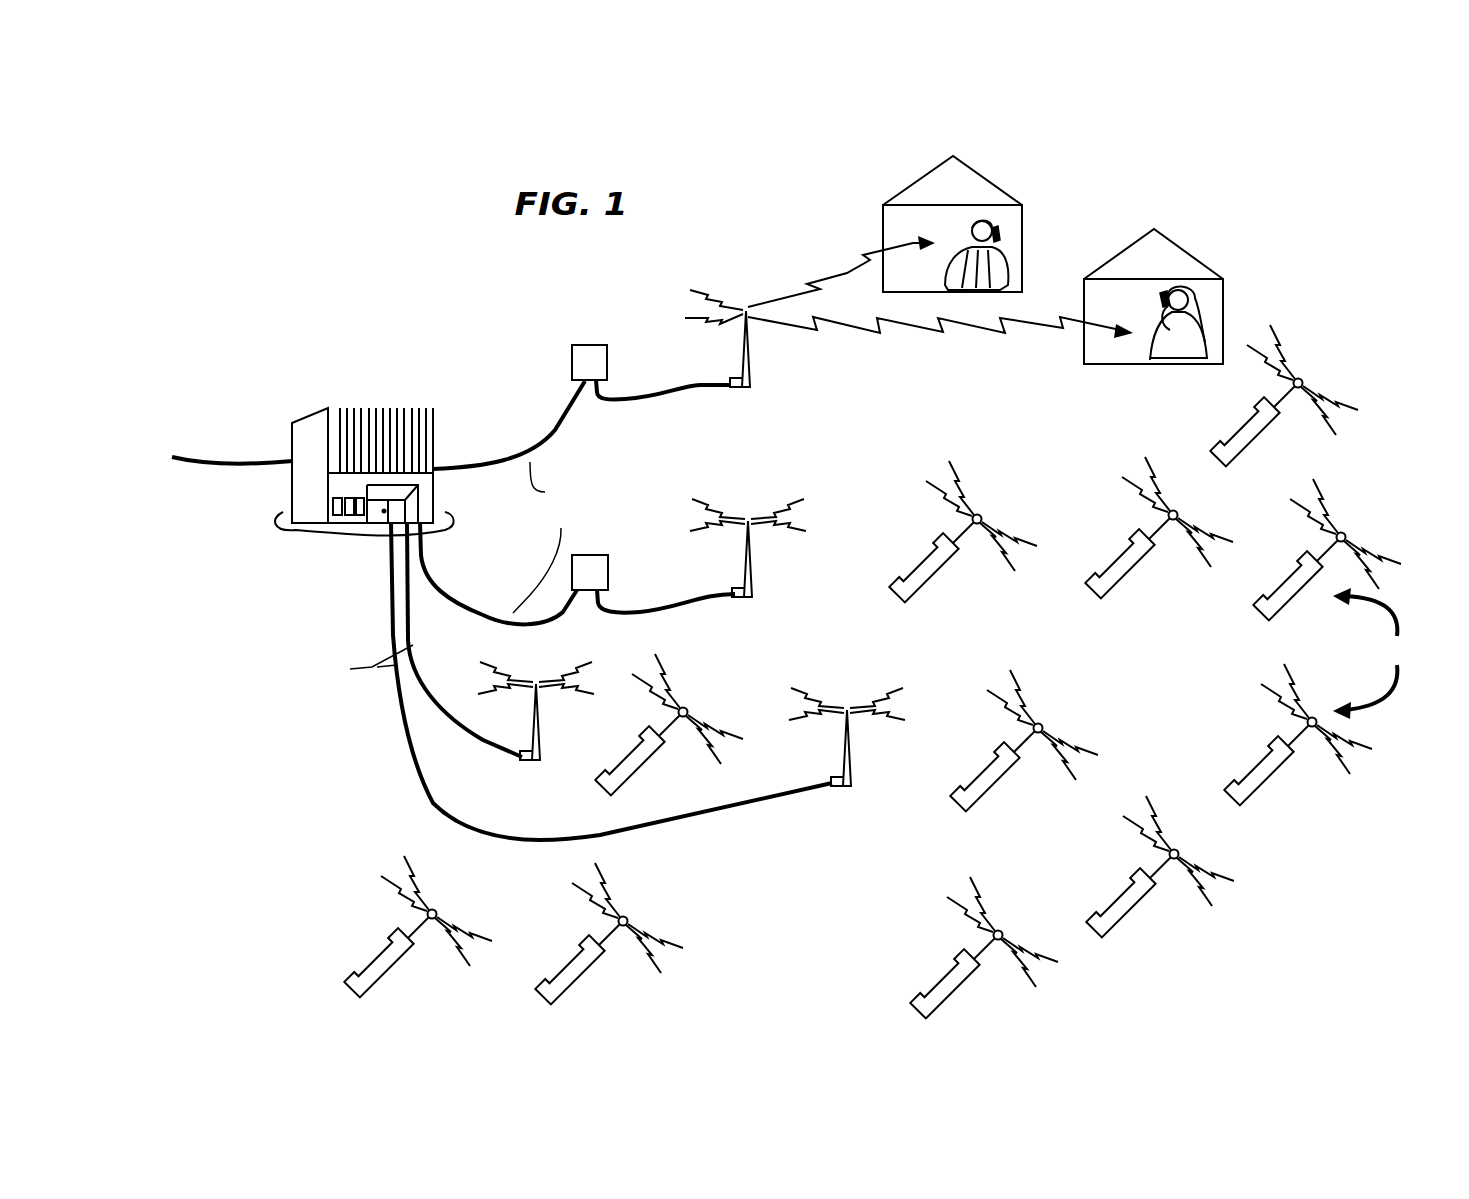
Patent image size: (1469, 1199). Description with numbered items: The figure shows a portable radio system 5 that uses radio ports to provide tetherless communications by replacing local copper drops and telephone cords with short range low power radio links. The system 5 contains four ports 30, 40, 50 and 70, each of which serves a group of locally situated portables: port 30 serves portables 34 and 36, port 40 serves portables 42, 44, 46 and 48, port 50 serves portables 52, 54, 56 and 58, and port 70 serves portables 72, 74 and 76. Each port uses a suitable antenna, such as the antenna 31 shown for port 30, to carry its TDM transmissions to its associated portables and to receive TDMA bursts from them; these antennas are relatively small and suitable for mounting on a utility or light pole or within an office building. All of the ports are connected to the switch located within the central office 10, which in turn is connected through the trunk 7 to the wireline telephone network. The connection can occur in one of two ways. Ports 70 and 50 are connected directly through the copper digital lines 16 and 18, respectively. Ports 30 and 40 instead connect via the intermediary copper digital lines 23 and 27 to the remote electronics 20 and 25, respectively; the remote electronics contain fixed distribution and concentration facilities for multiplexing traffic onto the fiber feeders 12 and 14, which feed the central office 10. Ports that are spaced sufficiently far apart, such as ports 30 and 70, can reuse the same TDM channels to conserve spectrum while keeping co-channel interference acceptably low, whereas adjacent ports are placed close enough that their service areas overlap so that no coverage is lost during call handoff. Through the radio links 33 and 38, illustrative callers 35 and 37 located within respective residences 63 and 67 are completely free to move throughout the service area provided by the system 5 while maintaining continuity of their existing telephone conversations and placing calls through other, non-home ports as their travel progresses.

The system 5 is at (205, 863).
The trunk 7 is at (217, 457).
The central office 10 is at (325, 415).
The fiber feeder 12 is at (557, 427).
The fiber feeder 14 is at (497, 615).
The copper digital line 16 is at (483, 742).
The copper digital line 18 is at (422, 786).
The remote electronics 20 is at (572, 365).
The intermediary copper digital line 23 is at (648, 398).
The remote electronics 25 is at (608, 568).
The intermediary copper digital line 27 is at (713, 597).
The port 30 is at (745, 390).
The antenna 31 is at (747, 311).
The radio link 33 is at (840, 276).
The portable 34 is at (997, 236).
The caller 35 is at (1005, 262).
The portable 36 is at (1162, 300).
The caller 37 is at (1200, 324).
The radio link 38 is at (913, 330).
The port 40 is at (752, 592).
The portable 42 is at (925, 560).
The portable 44 is at (1128, 545).
The portable 46 is at (1290, 580).
The portable 48 is at (1243, 428).
The port 50 is at (845, 790).
The portable 52 is at (955, 968).
The portable 54 is at (993, 757).
The portable 56 is at (1129, 889).
The portable 58 is at (1268, 758).
The residence 63 is at (993, 180).
The residence 67 is at (1188, 250).
The port 70 is at (536, 763).
The portable 72 is at (388, 948).
The portable 74 is at (648, 768).
The portable 76 is at (568, 965).